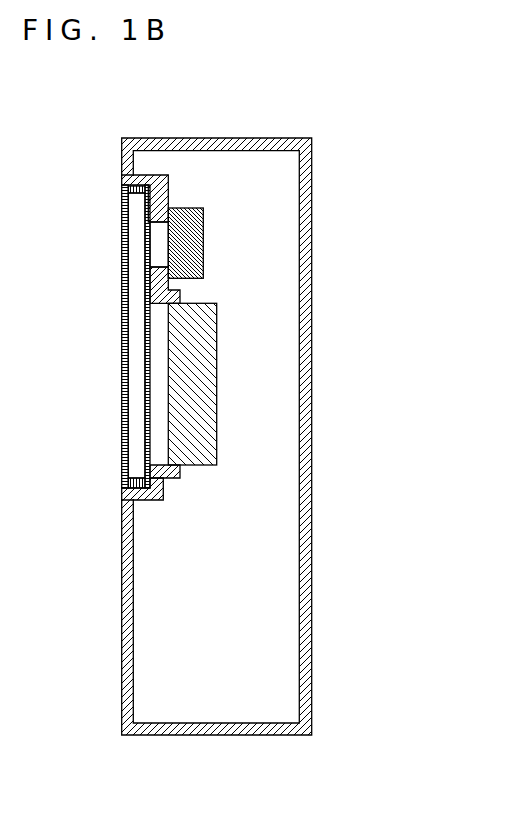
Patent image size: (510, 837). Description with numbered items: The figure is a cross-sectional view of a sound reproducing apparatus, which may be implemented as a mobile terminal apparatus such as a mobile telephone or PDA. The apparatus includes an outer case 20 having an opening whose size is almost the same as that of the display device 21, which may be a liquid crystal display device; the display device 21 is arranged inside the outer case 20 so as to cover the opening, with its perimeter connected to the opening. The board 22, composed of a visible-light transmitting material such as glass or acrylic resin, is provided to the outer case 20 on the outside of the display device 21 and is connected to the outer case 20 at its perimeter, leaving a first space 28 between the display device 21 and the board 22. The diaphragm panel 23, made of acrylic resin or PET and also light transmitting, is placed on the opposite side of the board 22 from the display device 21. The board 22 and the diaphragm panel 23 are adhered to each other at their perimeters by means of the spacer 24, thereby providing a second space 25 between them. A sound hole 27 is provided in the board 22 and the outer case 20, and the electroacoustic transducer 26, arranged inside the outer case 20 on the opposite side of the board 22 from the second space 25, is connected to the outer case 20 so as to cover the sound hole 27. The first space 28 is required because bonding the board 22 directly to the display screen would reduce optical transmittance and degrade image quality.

The outer case 20 is at (309, 296).
The display device 21 is at (213, 400).
The board 22 is at (140, 449).
The diaphragm panel 23 is at (121, 325).
The spacer 24 is at (121, 187).
The second space 25 is at (136, 390).
The electroacoustic transducer 26 is at (197, 244).
The sound hole 27 is at (160, 245).
The first space 28 is at (215, 445).